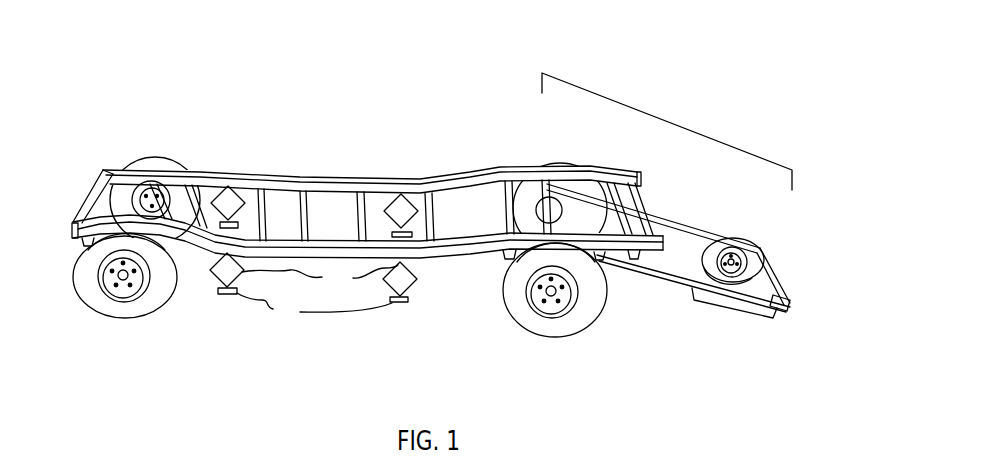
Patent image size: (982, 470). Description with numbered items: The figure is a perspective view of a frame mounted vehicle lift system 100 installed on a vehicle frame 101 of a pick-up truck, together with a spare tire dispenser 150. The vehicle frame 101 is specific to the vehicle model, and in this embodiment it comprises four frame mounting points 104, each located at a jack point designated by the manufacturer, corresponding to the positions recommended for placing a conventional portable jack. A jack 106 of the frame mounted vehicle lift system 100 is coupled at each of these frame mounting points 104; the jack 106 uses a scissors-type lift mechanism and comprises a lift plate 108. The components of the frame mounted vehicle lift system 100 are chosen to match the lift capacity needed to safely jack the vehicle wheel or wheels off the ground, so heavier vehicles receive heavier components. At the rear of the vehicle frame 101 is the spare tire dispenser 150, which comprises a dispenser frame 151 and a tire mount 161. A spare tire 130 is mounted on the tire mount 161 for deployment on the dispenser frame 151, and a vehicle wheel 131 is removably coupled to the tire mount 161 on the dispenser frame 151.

The frame mounted vehicle lift system 100 is at (765, 70).
The vehicle frame 101 is at (314, 184).
The frame mounting point 104 is at (232, 186).
The jack 106 is at (320, 276).
The lift plate 108 is at (314, 308).
The spare tire 130 is at (716, 247).
The vehicle wheel 131 is at (745, 259).
The spare tire dispenser 150 is at (633, 108).
The dispenser frame 151 is at (660, 271).
The tire mount 161 is at (742, 319).